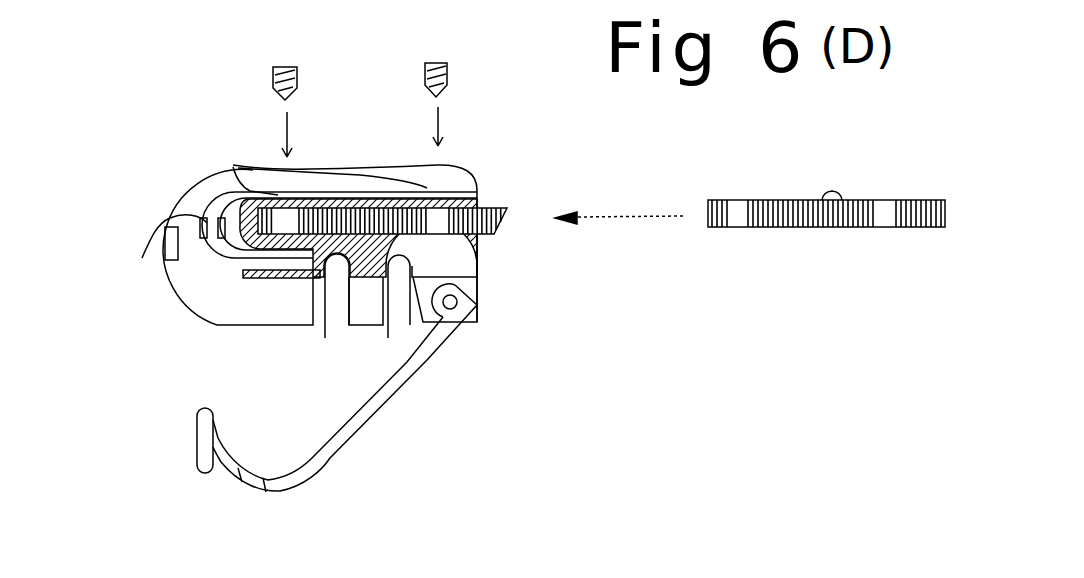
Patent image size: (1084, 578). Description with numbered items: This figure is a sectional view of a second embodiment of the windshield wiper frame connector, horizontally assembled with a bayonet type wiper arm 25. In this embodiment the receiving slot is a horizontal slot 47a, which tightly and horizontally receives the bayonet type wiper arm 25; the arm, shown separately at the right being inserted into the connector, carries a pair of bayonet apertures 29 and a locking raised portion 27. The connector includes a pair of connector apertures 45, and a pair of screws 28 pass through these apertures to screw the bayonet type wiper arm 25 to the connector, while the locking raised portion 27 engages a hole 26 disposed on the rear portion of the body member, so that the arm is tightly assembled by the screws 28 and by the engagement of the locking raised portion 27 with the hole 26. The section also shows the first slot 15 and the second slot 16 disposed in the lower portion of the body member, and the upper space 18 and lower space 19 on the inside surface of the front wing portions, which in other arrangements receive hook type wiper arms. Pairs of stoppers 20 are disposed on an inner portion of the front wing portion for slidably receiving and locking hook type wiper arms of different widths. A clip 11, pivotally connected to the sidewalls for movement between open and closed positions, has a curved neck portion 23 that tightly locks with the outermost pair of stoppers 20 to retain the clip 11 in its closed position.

The clip 11 is at (411, 398).
The first slot 15 is at (321, 332).
The second slot 16 is at (396, 326).
The upper space 18 is at (248, 266).
The lower space 19 is at (283, 303).
The stoppers 20 is at (142, 258).
The curved neck portion 23 is at (250, 484).
The bayonet type wiper arm 25 is at (500, 194).
The hole 26 is at (386, 198).
The locking raised portion 27 is at (833, 192).
The screws 28 is at (300, 80).
The bayonet apertures 29 is at (440, 233).
The connector apertures 45 is at (233, 165).
The horizontal slot 47a is at (427, 188).